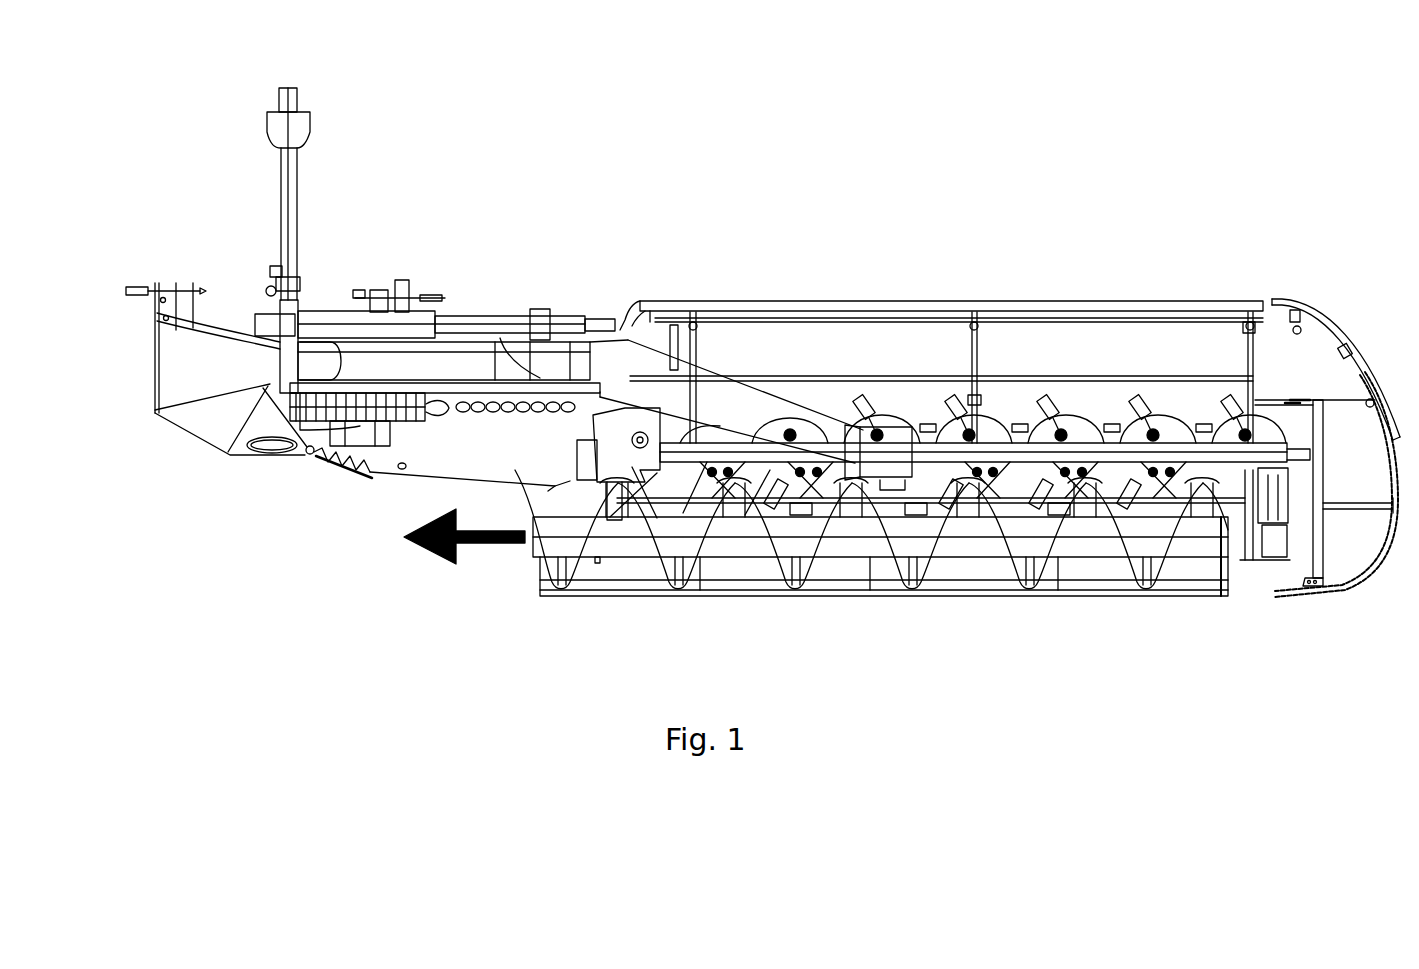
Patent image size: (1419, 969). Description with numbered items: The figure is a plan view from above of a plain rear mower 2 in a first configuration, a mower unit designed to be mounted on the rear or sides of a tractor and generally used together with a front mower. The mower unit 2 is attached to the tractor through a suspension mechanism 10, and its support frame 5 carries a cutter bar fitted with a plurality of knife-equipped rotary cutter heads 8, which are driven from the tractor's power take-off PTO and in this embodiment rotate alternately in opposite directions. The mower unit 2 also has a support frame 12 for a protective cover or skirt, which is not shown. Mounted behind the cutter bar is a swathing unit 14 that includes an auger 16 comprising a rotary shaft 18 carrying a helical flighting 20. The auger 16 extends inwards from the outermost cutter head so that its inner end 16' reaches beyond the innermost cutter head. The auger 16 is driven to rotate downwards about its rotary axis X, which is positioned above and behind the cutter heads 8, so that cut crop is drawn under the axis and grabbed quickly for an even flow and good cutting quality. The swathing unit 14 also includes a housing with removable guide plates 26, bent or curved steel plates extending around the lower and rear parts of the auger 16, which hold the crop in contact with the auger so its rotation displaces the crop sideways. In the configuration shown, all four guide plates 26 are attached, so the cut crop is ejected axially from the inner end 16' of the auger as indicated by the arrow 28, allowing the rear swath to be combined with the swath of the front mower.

The rear mower 2 is at (1050, 78).
The suspension mechanism 10 is at (439, 212).
The power take-off PTO is at (280, 191).
The support frame 12 is at (795, 300).
The swathing unit 14 is at (1203, 620).
The support frame 5 is at (1020, 452).
The rotary cutter head 8 is at (1090, 426).
The auger 16 is at (862, 566).
The inner end of the auger 16' is at (518, 606).
The rotary shaft 18 is at (866, 555).
The helical flighting 20 is at (912, 570).
The guide plate 26 is at (622, 587).
The rotary axis X is at (1078, 547).
The arrow 28 is at (478, 546).